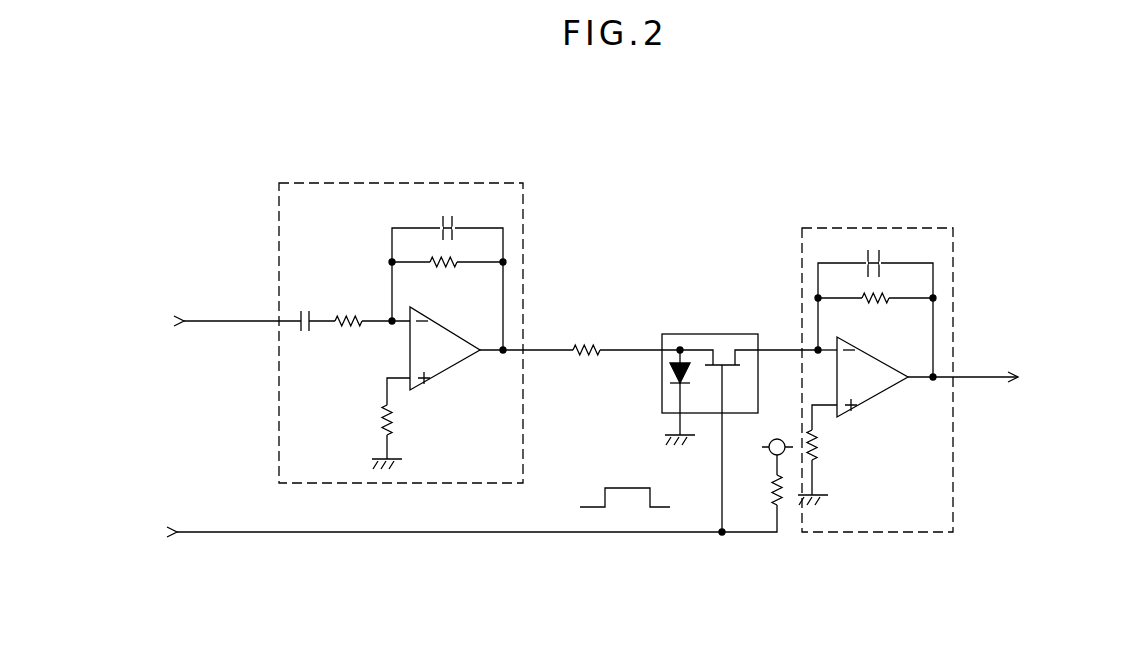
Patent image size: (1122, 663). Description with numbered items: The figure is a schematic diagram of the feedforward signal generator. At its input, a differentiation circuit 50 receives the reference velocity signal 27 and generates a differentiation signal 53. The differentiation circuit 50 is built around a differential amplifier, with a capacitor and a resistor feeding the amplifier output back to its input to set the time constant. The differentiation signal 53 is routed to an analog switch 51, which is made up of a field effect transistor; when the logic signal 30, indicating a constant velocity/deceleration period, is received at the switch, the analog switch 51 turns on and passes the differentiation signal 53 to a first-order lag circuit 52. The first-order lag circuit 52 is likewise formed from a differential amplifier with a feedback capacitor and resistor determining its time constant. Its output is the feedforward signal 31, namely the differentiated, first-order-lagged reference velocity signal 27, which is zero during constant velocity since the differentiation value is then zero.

The reference velocity signal 27 is at (212, 321).
The logic signal 30 is at (227, 532).
The feedforward signal 31 is at (958, 377).
The differentiation circuit 50 is at (470, 183).
The analog switch 51 is at (685, 334).
The first-order lag circuit 52 is at (838, 228).
The differentiation signal 53 is at (538, 349).